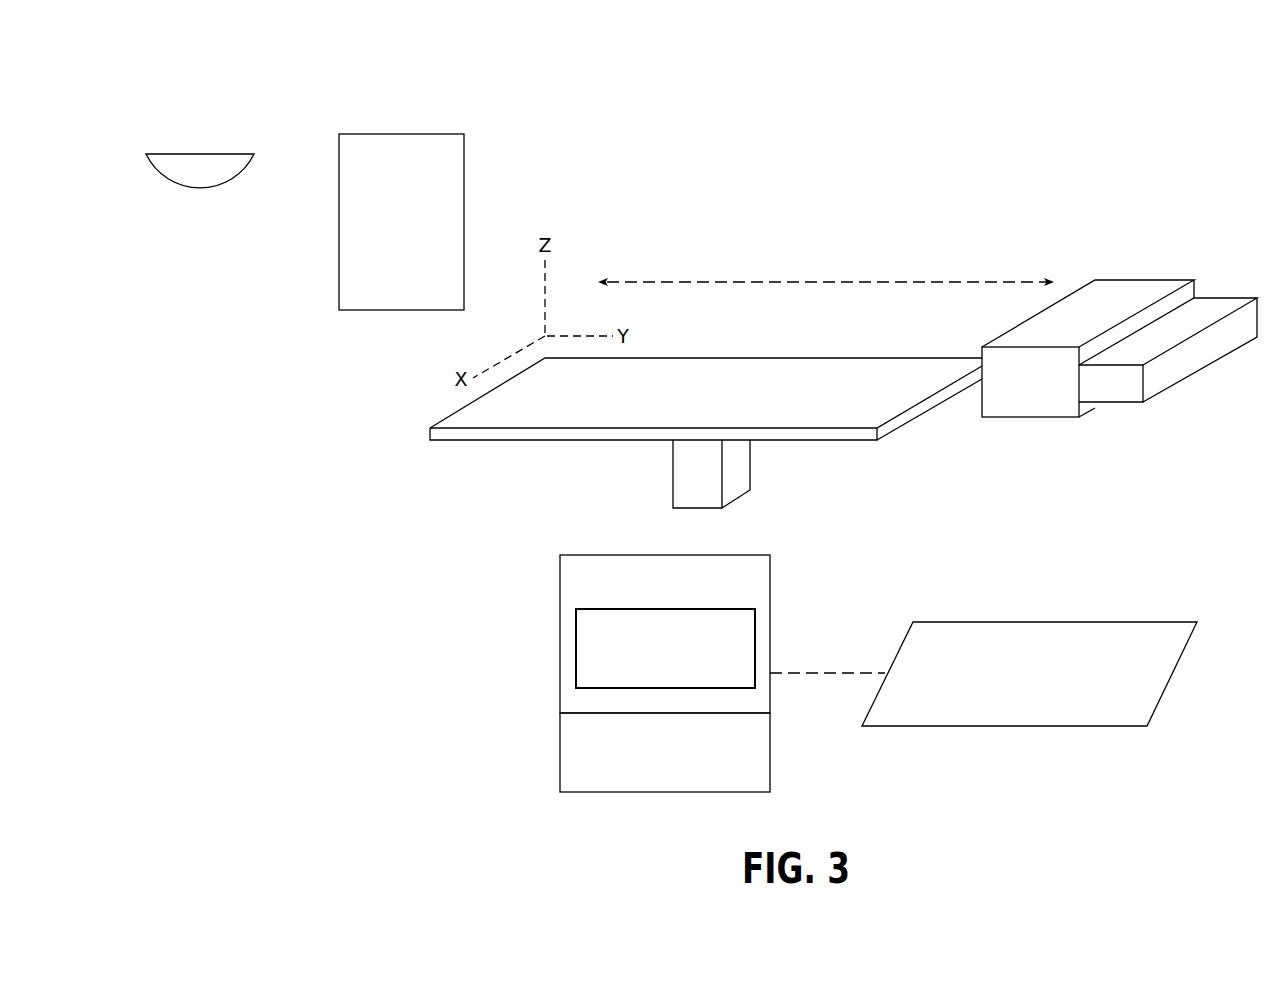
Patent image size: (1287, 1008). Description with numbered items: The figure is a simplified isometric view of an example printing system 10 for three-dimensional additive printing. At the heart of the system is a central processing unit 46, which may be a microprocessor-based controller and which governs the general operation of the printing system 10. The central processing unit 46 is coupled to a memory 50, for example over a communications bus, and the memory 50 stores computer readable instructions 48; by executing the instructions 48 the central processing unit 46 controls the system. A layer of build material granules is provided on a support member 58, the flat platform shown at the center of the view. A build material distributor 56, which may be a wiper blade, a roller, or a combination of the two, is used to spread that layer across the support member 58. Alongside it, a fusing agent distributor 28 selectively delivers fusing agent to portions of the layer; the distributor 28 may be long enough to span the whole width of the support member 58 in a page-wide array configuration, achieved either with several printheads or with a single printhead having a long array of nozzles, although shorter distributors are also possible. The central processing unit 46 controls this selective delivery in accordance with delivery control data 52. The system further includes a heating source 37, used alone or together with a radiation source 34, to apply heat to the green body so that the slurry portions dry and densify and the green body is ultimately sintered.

The printing system 10 is at (1058, 118).
The radiation source 34 is at (199, 153).
The heating source 37 is at (464, 160).
The support member 58 is at (763, 358).
The build material distributor 56 is at (1143, 280).
The fusing agent distributor 28 is at (1223, 298).
The memory 50 is at (578, 582).
The computer readable instructions 48 is at (576, 648).
The central processing unit 46 is at (560, 750).
The delivery control data 52 is at (1052, 622).